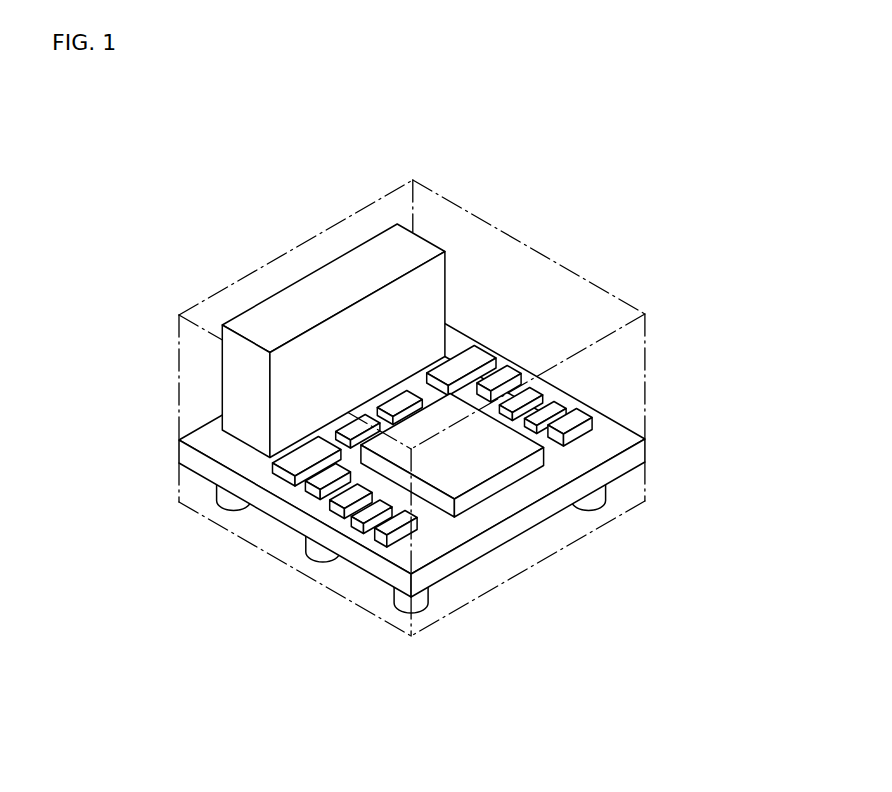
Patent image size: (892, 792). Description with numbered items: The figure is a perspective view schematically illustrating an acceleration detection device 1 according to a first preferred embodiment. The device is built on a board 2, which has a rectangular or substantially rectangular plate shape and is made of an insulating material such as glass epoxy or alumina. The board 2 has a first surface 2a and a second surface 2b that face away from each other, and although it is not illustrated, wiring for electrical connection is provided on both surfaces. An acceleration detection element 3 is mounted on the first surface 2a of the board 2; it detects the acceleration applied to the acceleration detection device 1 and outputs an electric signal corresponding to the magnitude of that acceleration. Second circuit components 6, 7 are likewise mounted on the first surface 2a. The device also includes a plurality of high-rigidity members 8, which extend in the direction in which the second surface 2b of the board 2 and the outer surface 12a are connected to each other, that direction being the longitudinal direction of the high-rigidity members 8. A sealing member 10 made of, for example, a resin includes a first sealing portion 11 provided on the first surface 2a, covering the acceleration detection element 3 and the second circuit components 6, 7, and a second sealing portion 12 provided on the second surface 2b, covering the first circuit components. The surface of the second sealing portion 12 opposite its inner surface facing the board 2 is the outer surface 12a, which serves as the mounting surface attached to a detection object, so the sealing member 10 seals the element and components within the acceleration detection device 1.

The acceleration detection device 1 is at (168, 150).
The board 2 is at (362, 451).
The first surface 2a is at (207, 433).
The second surface 2b is at (200, 478).
The acceleration detection element 3 is at (327, 263).
The second circuit component 6 is at (500, 483).
The second circuit component 7 is at (418, 520).
The high-rigidity member 8 is at (307, 551).
The sealing member 10 is at (752, 340).
The first sealing portion 11 is at (652, 379).
The second sealing portion 12 is at (465, 523).
The outer surface 12a is at (557, 553).